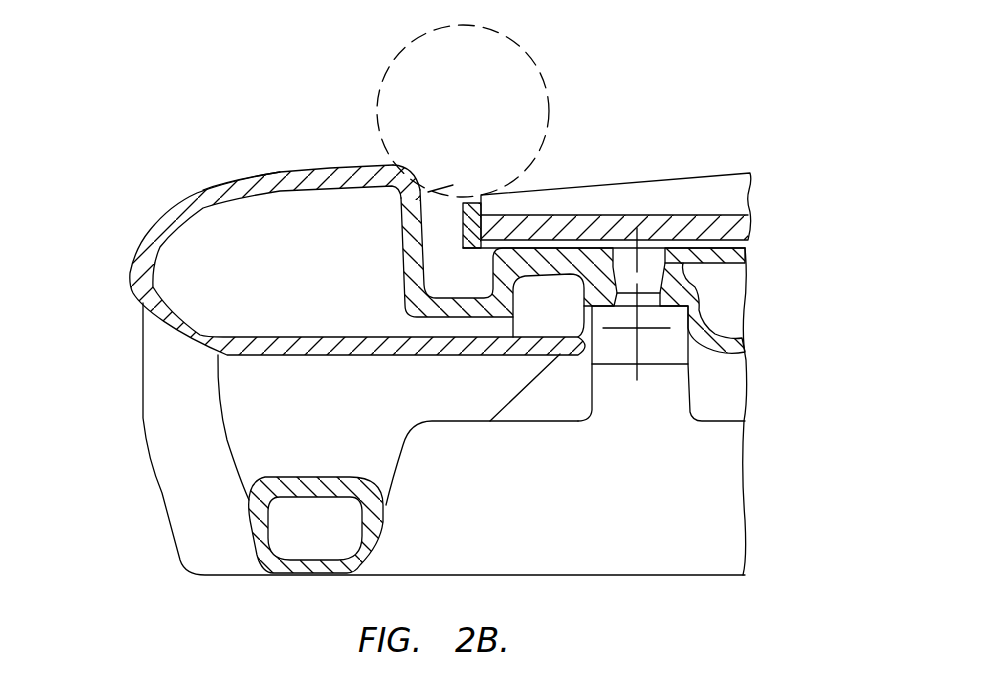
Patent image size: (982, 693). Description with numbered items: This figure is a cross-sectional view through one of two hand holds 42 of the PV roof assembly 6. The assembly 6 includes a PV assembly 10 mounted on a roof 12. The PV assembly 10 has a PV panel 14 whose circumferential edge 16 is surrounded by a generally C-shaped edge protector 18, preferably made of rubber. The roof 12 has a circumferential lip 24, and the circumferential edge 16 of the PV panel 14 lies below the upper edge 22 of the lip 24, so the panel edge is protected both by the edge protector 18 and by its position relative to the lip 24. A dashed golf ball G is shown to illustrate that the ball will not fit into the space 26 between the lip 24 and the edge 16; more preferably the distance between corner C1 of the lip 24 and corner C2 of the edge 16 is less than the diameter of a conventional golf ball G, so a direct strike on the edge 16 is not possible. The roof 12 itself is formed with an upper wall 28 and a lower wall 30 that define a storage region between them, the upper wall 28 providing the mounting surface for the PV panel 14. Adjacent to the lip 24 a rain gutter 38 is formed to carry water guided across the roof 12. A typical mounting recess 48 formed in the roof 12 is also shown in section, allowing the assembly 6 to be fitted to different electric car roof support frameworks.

The PV roof assembly 6 is at (782, 74).
The PV assembly 10 is at (748, 173).
The roof 12 is at (140, 207).
The PV panel 14 is at (610, 213).
The circumferential edge 16 is at (481, 205).
The edge protector 18 is at (428, 237).
The upper edge 22 is at (373, 240).
The circumferential lip 24 is at (203, 190).
The space 26 is at (430, 297).
The upper wall 28 is at (747, 258).
The lower wall 30 is at (745, 348).
The rain gutter 38 is at (457, 290).
The hand hold 42 is at (250, 408).
The mounting recess 48 is at (648, 280).
The golf ball G is at (553, 90).
The corner of lip C1 is at (402, 172).
The corner of edge C2 is at (463, 212).